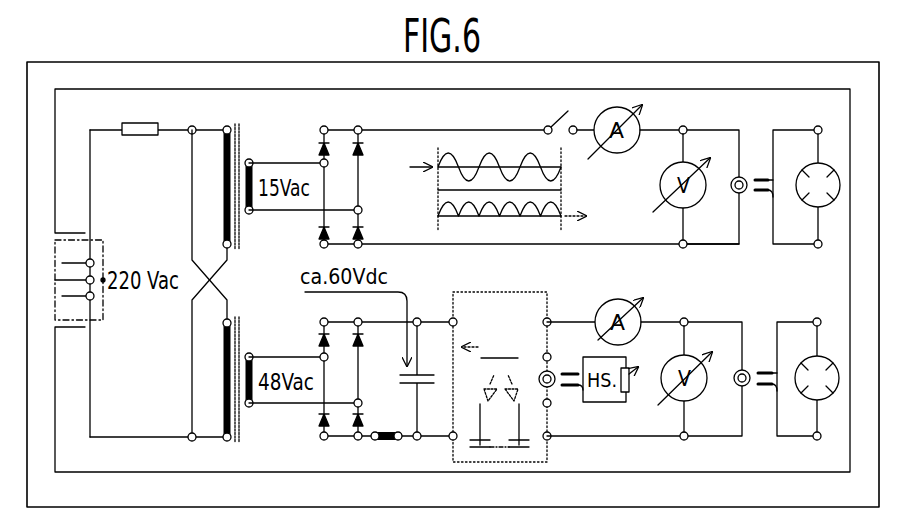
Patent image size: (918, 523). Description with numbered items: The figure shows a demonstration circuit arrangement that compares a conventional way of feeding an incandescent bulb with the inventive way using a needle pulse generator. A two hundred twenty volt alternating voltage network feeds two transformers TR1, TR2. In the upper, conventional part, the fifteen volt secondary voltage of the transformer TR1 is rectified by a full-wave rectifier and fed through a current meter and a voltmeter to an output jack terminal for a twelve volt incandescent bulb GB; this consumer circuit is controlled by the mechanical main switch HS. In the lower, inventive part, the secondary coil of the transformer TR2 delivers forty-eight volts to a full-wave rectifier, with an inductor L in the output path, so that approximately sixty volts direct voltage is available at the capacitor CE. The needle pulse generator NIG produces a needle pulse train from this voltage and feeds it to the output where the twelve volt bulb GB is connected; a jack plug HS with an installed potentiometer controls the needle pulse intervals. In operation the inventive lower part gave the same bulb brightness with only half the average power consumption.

The transformer TR1 is at (235, 175).
The transformer TR2 is at (235, 393).
The main switch HS is at (558, 117).
The inductor L is at (386, 452).
The capacitor CE is at (423, 379).
The needle pulse generator NIG is at (502, 377).
The incandescent bulb GB is at (806, 284).